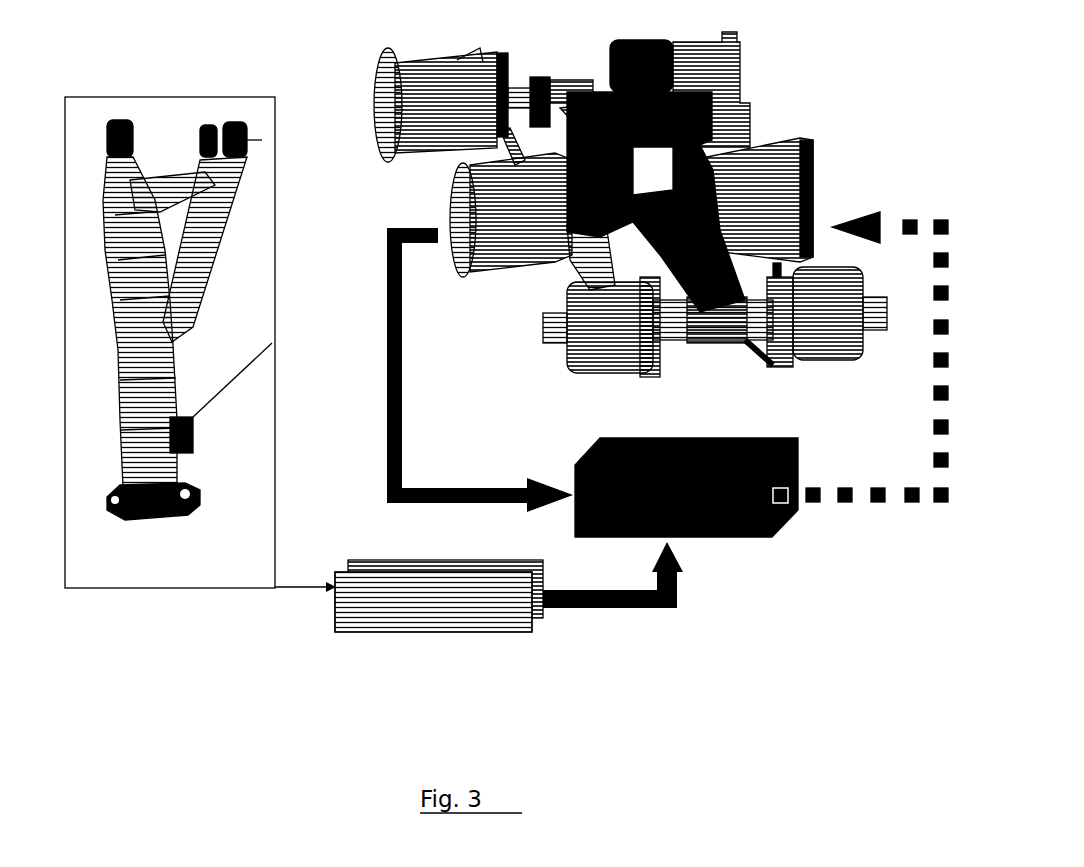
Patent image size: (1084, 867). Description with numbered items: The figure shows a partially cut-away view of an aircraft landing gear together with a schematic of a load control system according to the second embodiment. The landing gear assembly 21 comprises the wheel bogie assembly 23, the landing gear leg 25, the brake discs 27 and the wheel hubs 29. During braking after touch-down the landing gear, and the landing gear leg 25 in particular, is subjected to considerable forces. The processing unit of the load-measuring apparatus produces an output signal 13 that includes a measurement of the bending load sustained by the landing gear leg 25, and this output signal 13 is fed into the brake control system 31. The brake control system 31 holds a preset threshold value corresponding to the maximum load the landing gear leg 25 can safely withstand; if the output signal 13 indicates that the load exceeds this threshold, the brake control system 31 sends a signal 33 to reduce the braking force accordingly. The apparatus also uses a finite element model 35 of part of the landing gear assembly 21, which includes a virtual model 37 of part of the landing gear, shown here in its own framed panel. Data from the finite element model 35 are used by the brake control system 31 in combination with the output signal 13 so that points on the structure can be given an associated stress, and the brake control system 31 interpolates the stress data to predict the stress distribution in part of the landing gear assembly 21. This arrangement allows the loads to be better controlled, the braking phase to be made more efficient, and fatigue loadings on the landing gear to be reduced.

The output signal 13 is at (387, 394).
The landing gear assembly 21 is at (571, 207).
The wheel bogie assembly 23 is at (552, 85).
The landing gear leg 25 is at (632, 40).
The brake discs 27 is at (617, 363).
The wheel hubs 29 is at (373, 90).
The brake control system 31 is at (737, 537).
The signal 33 is at (933, 353).
The finite element model 35 is at (472, 626).
The virtual model 37 is at (206, 497).